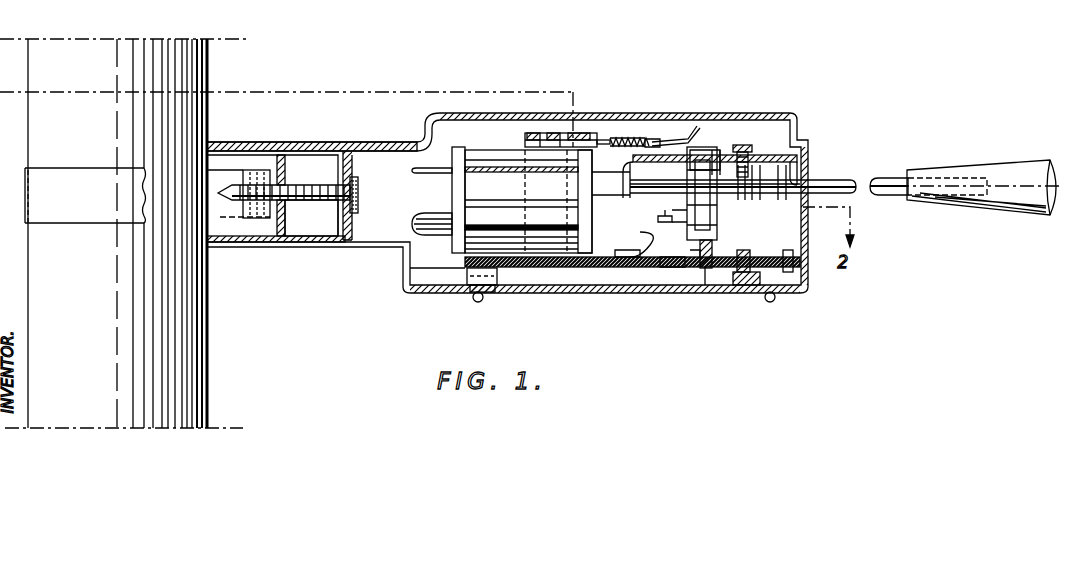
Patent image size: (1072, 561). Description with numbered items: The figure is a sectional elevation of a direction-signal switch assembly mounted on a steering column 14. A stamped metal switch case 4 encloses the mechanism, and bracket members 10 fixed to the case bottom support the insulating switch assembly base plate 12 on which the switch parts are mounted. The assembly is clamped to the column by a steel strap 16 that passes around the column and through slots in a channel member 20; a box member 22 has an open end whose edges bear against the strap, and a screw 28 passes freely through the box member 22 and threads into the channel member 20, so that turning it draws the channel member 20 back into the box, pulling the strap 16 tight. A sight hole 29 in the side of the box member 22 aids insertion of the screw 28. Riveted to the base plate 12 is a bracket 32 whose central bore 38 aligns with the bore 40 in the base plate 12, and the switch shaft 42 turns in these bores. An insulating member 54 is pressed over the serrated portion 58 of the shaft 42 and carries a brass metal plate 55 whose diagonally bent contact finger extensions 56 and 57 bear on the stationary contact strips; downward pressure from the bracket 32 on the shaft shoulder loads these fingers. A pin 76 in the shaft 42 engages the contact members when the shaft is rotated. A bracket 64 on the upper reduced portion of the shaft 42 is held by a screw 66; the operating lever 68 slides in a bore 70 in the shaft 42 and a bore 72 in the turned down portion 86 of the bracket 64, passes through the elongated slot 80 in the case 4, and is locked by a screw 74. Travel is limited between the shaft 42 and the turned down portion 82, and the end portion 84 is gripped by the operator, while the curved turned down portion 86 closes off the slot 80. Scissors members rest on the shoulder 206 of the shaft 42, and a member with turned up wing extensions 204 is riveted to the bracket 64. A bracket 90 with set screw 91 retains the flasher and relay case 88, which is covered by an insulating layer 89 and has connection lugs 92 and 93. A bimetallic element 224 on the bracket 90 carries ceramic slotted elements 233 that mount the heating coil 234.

The switch case 4 is at (470, 113).
The bracket members 10 is at (495, 275).
The switch assembly base plate 12 is at (572, 263).
The steering column 14 is at (205, 68).
The steel strap 16 is at (86, 222).
The channel member 20 is at (286, 186).
The box member 22 is at (353, 166).
The screw 28 is at (306, 204).
The sight hole 29 is at (280, 150).
The bracket 32 is at (672, 266).
The bore 38 is at (702, 193).
The bore 40 is at (714, 268).
The switch shaft 42 is at (752, 196).
The insulating member 54 is at (725, 250).
The metal plate 55 is at (640, 232).
The contact finger extension 56 is at (625, 268).
The contact finger 57 is at (775, 256).
The reduced diameter serrated portion 58 is at (695, 265).
The bracket 64 is at (680, 142).
The screw 66 is at (715, 150).
The operating lever 68 is at (889, 180).
The bore 70 is at (741, 193).
The bore 72 is at (782, 196).
The screw 74 is at (736, 146).
The pin 76 is at (665, 219).
The elongated slot 80 is at (829, 180).
The turned down portion 82 is at (615, 178).
The end portion 84 is at (1012, 172).
The turned down portion 86 is at (787, 165).
The flasher and relay assembly case 88 is at (514, 191).
The layer of insulating material 89 is at (507, 158).
The bracket 90 is at (572, 134).
The set screw 91 is at (545, 147).
The connection lug 92 is at (437, 174).
The connection lug 93 is at (417, 226).
The turned up wing extensions 204 is at (700, 135).
The shoulder 206 is at (666, 206).
The bimetallic element 224 is at (683, 135).
The slotted elements 233 is at (603, 136).
The heating coil 234 is at (618, 140).